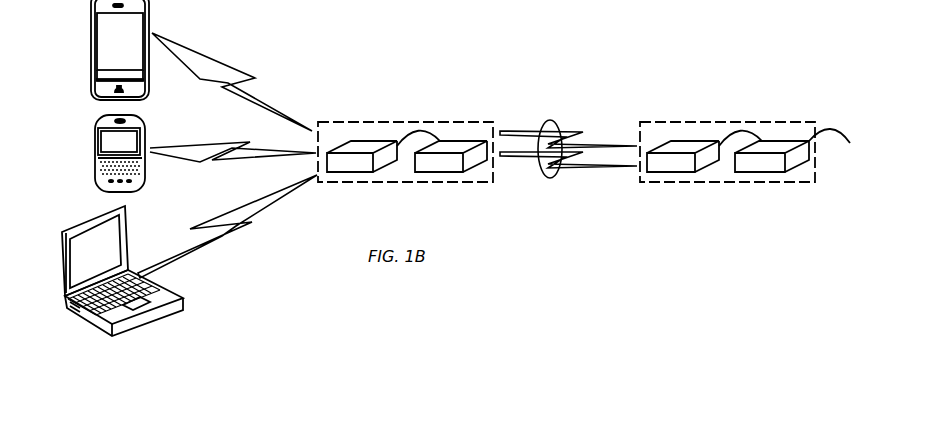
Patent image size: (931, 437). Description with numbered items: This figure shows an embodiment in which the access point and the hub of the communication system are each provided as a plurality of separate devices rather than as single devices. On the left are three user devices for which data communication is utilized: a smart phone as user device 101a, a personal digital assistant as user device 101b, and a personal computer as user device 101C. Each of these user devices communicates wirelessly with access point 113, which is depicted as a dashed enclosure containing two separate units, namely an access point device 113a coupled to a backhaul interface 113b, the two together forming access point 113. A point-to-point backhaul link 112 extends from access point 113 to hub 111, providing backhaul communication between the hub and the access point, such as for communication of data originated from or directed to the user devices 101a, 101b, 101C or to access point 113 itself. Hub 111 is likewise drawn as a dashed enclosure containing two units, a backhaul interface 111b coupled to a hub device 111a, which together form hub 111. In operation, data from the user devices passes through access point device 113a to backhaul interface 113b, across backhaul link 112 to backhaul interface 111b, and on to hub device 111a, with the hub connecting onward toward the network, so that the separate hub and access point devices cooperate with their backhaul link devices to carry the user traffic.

The user device 101a is at (90, 45).
The user device 101b is at (96, 148).
The user device 101C is at (78, 223).
The access point 113 is at (407, 122).
The access point device 113a is at (352, 174).
The backhaul interface 113b is at (440, 174).
The backhaul link 112 is at (558, 120).
The hub 111 is at (727, 122).
The hub device 111a is at (762, 174).
The backhaul interface 111b is at (670, 174).